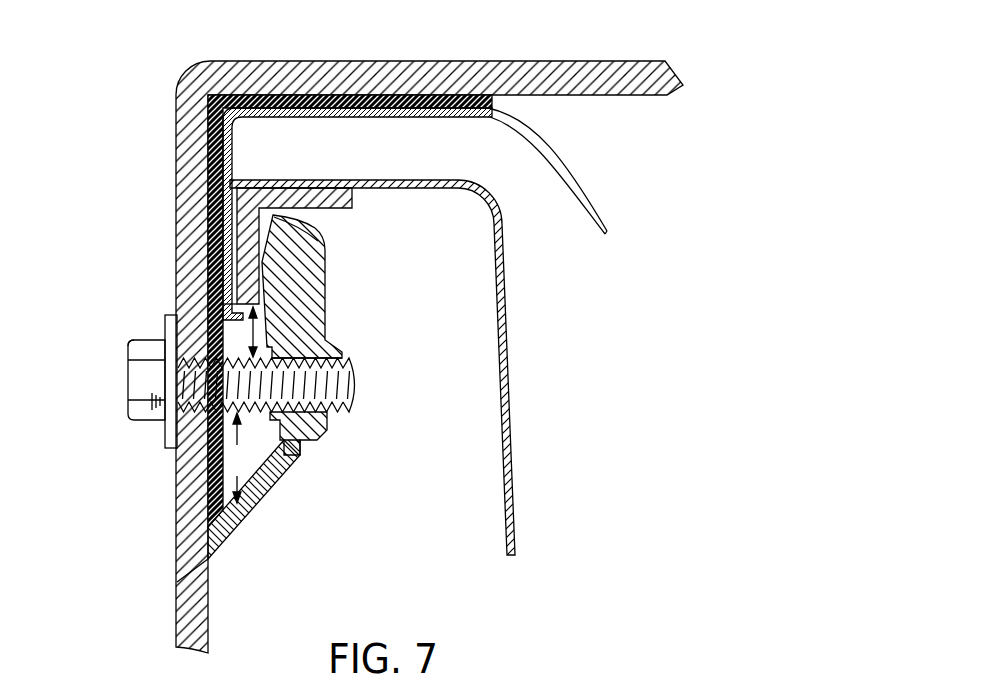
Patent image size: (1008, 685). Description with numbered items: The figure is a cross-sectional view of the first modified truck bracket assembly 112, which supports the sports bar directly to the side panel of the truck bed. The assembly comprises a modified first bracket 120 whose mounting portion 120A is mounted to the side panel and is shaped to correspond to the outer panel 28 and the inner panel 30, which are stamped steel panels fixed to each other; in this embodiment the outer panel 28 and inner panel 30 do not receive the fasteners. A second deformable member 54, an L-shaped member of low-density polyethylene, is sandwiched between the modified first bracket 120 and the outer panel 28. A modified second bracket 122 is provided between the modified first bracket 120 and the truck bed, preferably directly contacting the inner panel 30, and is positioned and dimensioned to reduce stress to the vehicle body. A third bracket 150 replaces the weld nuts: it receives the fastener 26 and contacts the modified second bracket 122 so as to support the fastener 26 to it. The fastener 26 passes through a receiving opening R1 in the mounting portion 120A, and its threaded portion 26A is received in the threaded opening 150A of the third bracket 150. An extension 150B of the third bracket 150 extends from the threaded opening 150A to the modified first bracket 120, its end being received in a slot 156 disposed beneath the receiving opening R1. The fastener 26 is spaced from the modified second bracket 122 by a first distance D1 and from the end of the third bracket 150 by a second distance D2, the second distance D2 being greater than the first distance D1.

The first modified truck bracket assembly 112 is at (583, 34).
The modified first bracket 120 is at (128, 150).
The mounting portion 120A is at (195, 235).
The second deformable member 54 is at (333, 104).
The slot 156 is at (182, 593).
The outer panel 28 is at (568, 172).
The inner panel 30 is at (503, 258).
The modified second bracket 122 is at (337, 209).
The third bracket 150 is at (331, 300).
The threaded opening 150A is at (314, 367).
The threaded portion 26A is at (257, 412).
The extension 150B is at (200, 558).
The fastener 26 is at (142, 438).
The first distance D1 is at (252, 333).
The second distance D2 is at (244, 458).
The receiving opening R1 is at (192, 363).